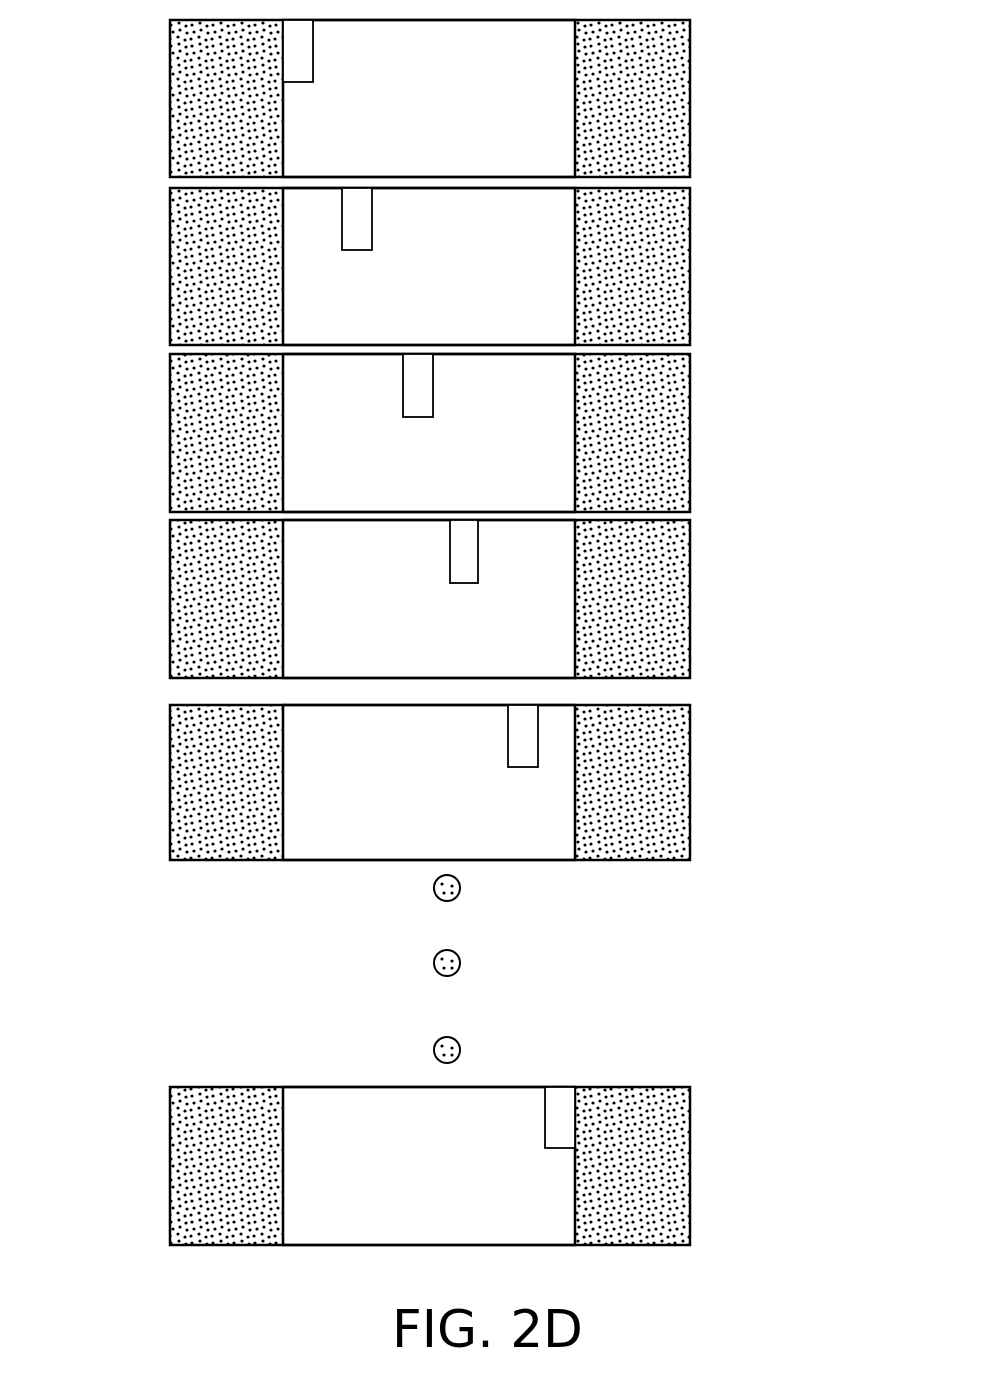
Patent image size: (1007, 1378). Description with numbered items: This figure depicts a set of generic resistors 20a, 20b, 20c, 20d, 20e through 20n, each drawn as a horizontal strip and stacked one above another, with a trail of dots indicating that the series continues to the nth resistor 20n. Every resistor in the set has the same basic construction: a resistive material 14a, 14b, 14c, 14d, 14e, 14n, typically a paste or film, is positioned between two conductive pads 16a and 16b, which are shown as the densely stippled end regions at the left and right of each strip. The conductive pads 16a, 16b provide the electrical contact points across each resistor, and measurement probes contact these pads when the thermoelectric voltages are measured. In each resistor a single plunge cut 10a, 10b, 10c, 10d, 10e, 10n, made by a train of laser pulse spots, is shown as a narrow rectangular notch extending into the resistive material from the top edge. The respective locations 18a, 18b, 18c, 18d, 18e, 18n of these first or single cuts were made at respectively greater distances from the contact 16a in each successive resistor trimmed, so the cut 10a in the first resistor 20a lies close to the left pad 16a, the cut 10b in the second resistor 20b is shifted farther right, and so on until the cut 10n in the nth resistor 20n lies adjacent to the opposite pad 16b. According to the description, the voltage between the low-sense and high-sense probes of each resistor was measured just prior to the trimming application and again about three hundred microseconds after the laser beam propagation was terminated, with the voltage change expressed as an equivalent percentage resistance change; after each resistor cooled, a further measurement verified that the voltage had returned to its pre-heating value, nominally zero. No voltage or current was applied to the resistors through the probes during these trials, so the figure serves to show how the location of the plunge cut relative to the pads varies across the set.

The plunge cut 10a is at (300, 50).
The plunge cut 10b is at (449, 232).
The plunge cut 10c is at (415, 378).
The plunge cut 10d is at (562, 575).
The plunge cut 10e is at (518, 730).
The plunge cut 10n is at (556, 1114).
The resistive material 14a is at (514, 89).
The resistive material 14b is at (514, 253).
The resistive material 14c is at (517, 418).
The resistive material 14d is at (404, 600).
The resistive material 14e is at (405, 785).
The resistive material 14n is at (402, 1175).
The location 18a is at (377, 146).
The location 18b is at (414, 313).
The location 18c is at (462, 474).
The location 18d is at (524, 649).
The location 18e is at (544, 832).
The location 18n is at (562, 1223).
The conductive pad 16a is at (205, 97).
The conductive pad 16b is at (673, 149).
The resistor 20a is at (690, 91).
The resistor 20b is at (690, 254).
The resistor 20c is at (690, 413).
The resistor 20d is at (690, 590).
The resistor 20e is at (690, 751).
The resistor 20n is at (690, 1111).